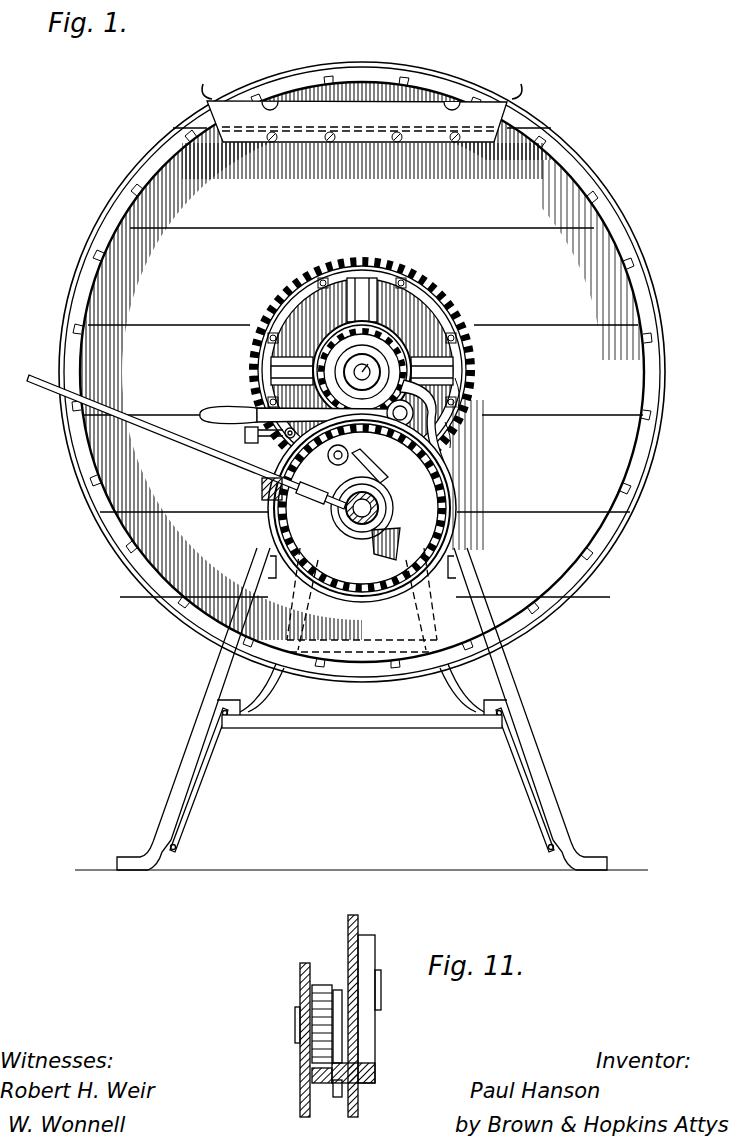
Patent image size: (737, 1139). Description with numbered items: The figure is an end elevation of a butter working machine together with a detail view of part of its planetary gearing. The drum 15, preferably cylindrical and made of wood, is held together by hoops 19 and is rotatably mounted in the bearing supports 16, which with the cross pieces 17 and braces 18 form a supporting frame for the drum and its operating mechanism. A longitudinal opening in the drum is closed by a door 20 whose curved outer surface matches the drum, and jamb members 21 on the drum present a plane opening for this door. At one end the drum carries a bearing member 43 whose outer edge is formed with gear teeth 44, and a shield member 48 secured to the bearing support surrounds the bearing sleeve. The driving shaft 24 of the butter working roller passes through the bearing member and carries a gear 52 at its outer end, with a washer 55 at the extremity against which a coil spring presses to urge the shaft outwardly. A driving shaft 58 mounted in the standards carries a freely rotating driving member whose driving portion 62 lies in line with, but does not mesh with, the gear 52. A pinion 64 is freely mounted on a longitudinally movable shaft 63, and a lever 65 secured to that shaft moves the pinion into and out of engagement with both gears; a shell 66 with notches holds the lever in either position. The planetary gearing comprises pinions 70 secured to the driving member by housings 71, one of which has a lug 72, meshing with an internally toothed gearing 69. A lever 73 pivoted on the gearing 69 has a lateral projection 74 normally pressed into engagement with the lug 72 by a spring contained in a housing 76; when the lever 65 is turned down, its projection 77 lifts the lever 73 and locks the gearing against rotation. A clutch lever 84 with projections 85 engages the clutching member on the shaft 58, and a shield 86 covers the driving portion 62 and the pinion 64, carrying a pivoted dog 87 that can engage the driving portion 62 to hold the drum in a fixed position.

In FIG. 1, the drum 15 is at (100, 248).
In FIG. 1, the bearing supports 16 is at (215, 686).
In FIG. 1, the cross pieces 17 is at (350, 718).
In FIG. 1, the braces 18 is at (205, 775).
In FIG. 1, the hoops 19 is at (62, 332).
In FIG. 1, the door 20 is at (372, 72).
In FIG. 1, the jamb members 21 is at (207, 122).
In FIG. 1, the driving shaft 24 is at (380, 364).
In FIG. 1, the bearing member 43 is at (368, 310).
In FIG. 1, the gear teeth 44 is at (392, 262).
In FIG. 1, the shield member 48 is at (328, 335).
In FIG. 1, the gear 52 is at (312, 352).
In FIG. 1, the washer 55 is at (345, 395).
In FIG. 1, the driving shaft 58 is at (365, 538).
In FIG. 1, the driving portion 62 is at (268, 504).
In FIG. 11, the driving portion 62 is at (300, 978).
In FIG. 1, the shaft 63 is at (450, 430).
In FIG. 1, the pinion 64 is at (436, 402).
In FIG. 1, the lever 65 is at (220, 412).
In FIG. 1, the shell 66 is at (455, 380).
In FIG. 1, the internally toothed gearing 69 is at (455, 528).
In FIG. 11, the internally toothed gearing 69 is at (358, 922).
In FIG. 11, the pinions 70 is at (318, 985).
In FIG. 11, the housings 71 is at (337, 990).
In FIG. 11, the lug 72 is at (335, 1092).
In FIG. 1, the lever 73 is at (323, 459).
In FIG. 11, the lever 73 is at (370, 960).
In FIG. 11, the lateral projection 74 is at (345, 1072).
In FIG. 1, the housing 76 is at (372, 478).
In FIG. 1, the projection 77 is at (438, 448).
In FIG. 1, the lever 84 is at (188, 446).
In FIG. 1, the projections 85 is at (380, 500).
In FIG. 1, the shield 86 is at (295, 516).
In FIG. 1, the dog 87 is at (245, 436).